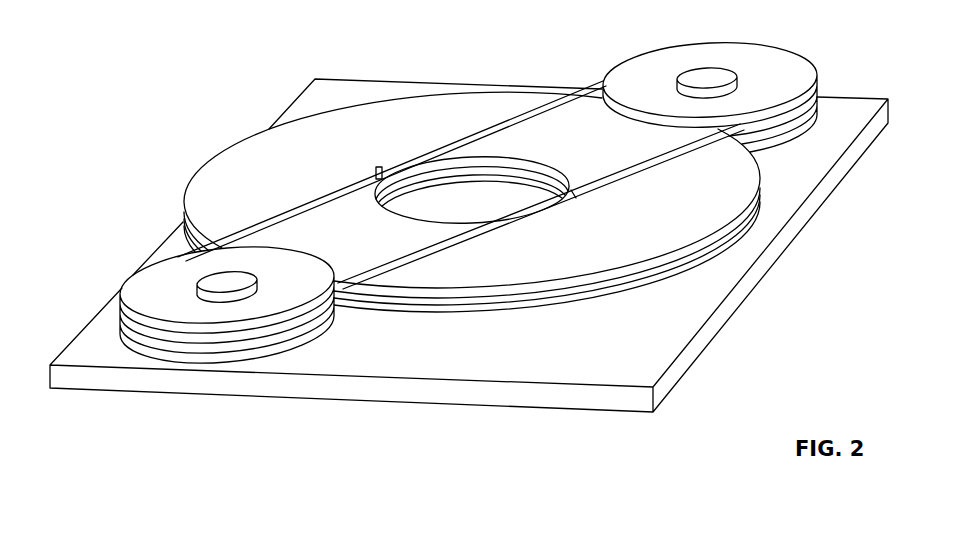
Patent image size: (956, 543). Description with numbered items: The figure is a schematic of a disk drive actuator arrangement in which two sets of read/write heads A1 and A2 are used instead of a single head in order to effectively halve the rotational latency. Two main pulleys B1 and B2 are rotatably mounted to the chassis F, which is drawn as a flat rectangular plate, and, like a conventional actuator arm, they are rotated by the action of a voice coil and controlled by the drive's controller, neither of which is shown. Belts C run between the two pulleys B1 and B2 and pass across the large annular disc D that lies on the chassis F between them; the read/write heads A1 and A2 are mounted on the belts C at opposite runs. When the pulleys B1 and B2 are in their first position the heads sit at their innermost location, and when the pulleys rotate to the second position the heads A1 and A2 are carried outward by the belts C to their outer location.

The chassis F is at (402, 363).
The annular disc D is at (413, 125).
The main pulley B1 is at (778, 68).
The main pulley B2 is at (200, 313).
The belts C is at (505, 118).
The read/write head A1 is at (572, 192).
The read/write head A2 is at (375, 167).